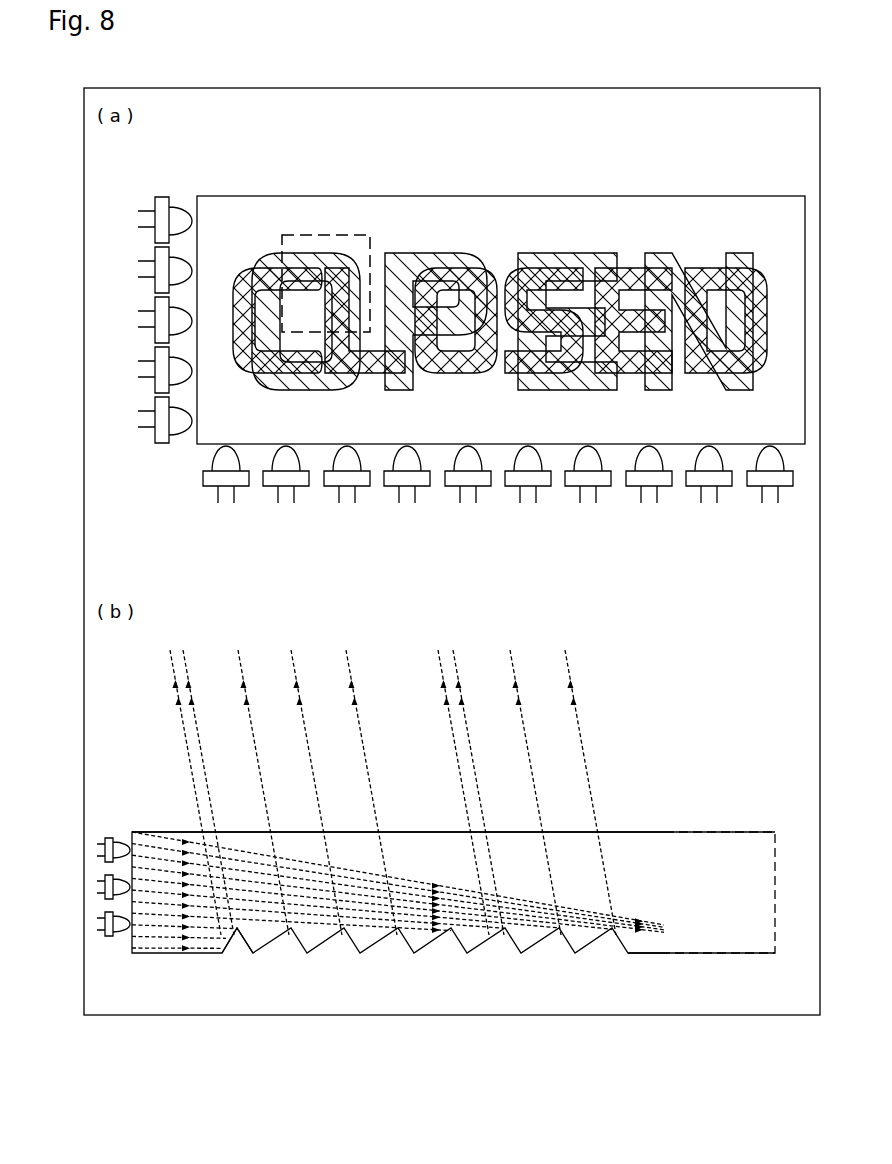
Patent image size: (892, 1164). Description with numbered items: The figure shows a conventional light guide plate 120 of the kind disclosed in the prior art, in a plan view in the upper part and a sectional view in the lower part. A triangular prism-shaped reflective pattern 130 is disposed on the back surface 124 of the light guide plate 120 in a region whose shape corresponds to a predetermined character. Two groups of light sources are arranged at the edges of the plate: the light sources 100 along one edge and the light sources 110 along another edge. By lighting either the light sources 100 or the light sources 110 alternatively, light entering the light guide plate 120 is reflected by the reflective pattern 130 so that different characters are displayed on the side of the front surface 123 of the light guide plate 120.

The light sources 100 is at (207, 478).
The light sources 110 is at (140, 413).
The light guide plate 120 is at (245, 190).
The front surface 123 is at (728, 832).
The back surface 124 is at (730, 955).
The reflective pattern 130 is at (224, 948).